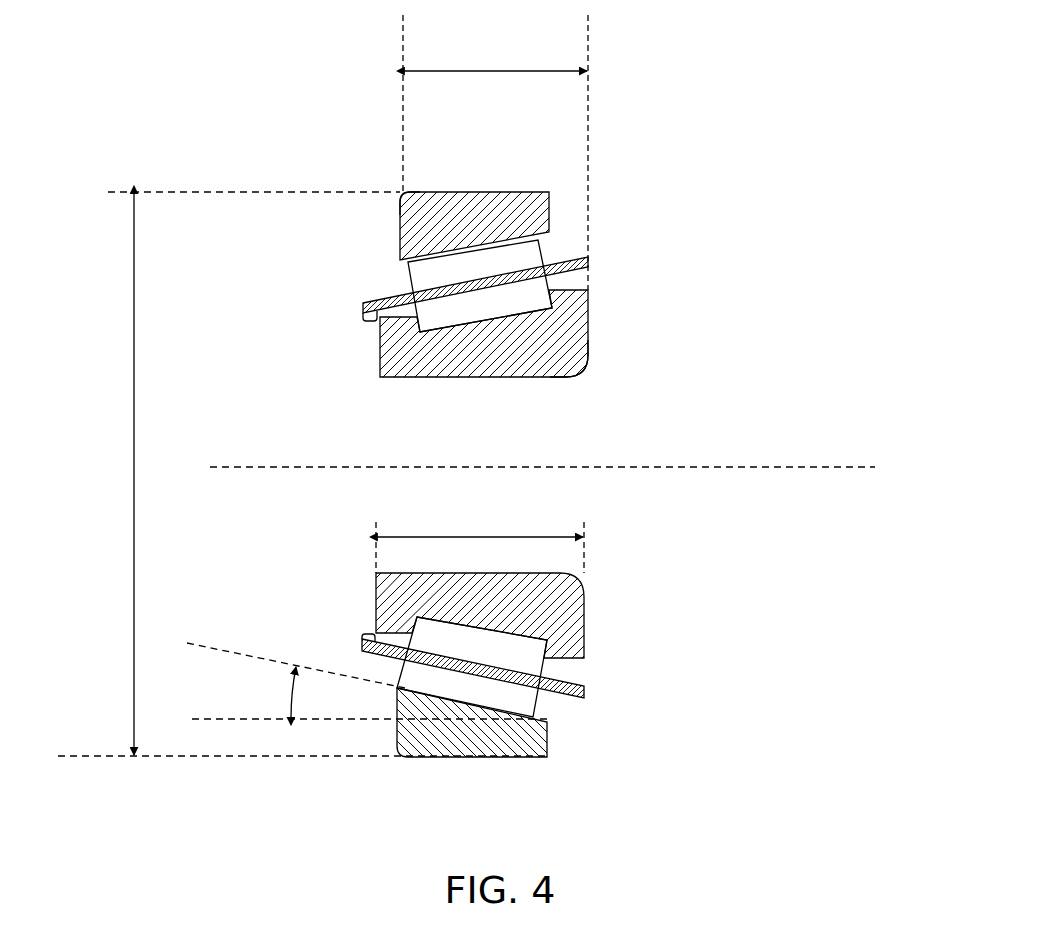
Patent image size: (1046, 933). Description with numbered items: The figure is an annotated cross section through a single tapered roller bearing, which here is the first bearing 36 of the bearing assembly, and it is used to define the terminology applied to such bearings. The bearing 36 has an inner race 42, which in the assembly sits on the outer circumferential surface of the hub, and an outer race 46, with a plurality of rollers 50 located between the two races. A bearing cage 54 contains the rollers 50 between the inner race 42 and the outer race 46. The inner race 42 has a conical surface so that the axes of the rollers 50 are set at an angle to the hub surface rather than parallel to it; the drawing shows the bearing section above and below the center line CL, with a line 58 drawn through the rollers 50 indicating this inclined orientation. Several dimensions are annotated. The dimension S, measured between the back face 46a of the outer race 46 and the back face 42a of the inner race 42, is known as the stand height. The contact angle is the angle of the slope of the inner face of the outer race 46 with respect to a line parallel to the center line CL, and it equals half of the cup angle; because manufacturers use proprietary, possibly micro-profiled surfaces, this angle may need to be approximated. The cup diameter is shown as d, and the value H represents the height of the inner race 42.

The first bearing 36 is at (692, 212).
The inner race 42 is at (572, 325).
The back face of the inner race 42a is at (588, 345).
The outer race 46 is at (505, 202).
The back face of the outer race 46a is at (399, 220).
The rollers 50 is at (411, 275).
The bearing cage 54 is at (590, 259).
The roller axis / force line 58 is at (521, 305).
The stand height S is at (490, 71).
The height of the inner race H is at (492, 537).
The cup diameter d is at (133, 460).
The center line CL is at (803, 465).